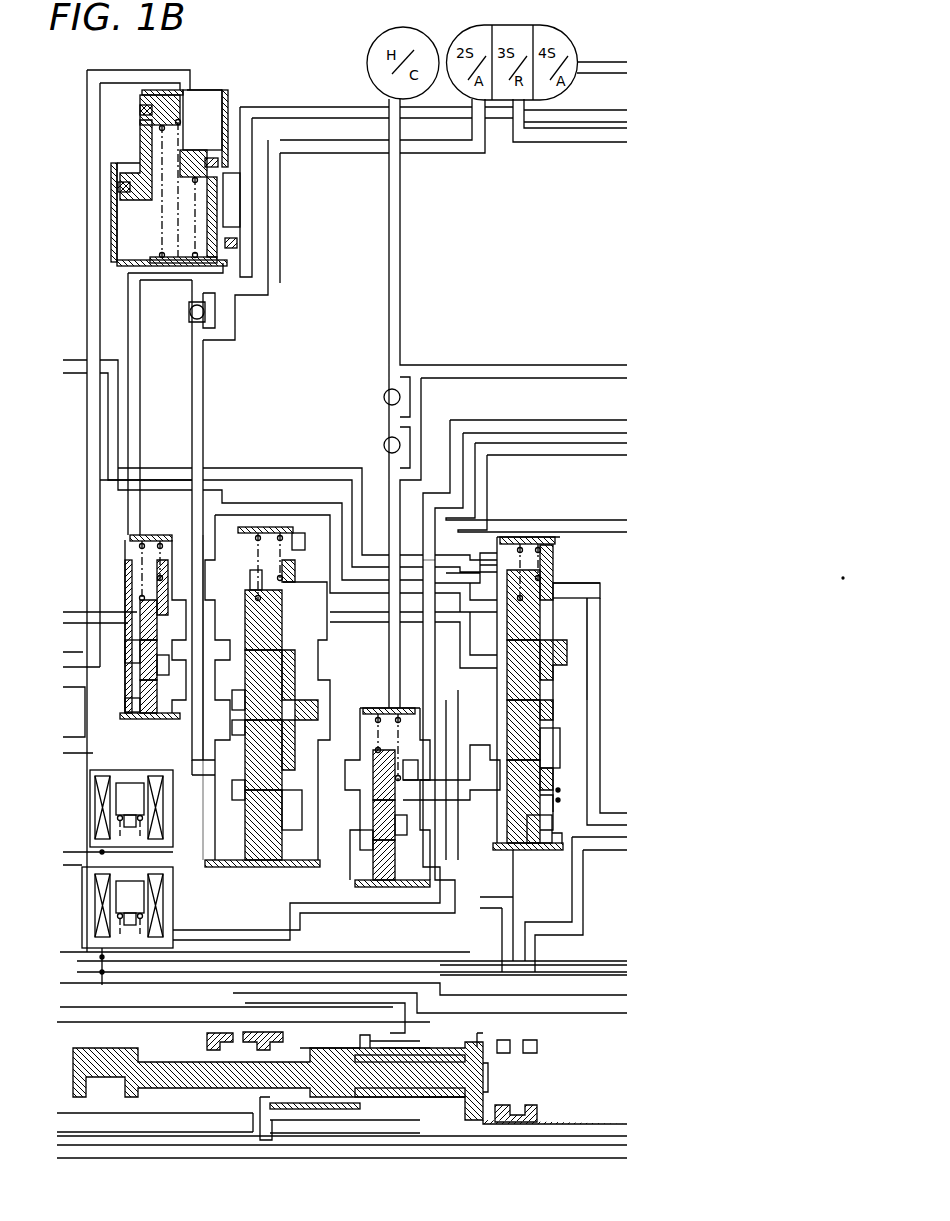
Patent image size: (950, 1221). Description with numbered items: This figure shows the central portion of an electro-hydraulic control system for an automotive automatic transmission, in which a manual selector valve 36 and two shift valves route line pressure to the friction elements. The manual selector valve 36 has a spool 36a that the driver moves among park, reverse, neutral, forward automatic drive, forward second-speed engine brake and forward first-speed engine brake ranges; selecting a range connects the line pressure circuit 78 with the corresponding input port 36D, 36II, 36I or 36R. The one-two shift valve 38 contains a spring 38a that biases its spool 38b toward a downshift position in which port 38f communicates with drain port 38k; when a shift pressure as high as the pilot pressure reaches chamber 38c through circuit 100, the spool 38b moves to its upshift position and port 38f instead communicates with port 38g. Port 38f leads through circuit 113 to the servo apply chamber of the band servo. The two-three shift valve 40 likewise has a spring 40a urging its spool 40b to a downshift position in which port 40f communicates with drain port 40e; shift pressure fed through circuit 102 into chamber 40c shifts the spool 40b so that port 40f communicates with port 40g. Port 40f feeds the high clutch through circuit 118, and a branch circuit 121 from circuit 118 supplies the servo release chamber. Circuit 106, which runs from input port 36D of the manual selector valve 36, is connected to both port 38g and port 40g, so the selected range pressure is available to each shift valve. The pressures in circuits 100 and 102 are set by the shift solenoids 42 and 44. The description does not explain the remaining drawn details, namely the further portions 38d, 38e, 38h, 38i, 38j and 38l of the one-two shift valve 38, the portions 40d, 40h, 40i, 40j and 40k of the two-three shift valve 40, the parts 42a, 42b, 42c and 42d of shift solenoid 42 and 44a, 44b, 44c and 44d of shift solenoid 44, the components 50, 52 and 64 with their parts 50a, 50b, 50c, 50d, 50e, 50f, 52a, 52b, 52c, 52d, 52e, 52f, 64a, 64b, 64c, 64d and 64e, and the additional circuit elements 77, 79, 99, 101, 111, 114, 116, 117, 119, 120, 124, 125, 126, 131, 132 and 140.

The manual selector valve 36 is at (218, 1142).
The input port 36I is at (215, 1036).
The input port 36II is at (250, 1125).
The input port 36D is at (303, 1043).
The input port 36R is at (505, 1105).
The spool 36a is at (488, 1080).
The 1-2 shift valve 38 is at (252, 870).
The spring 38a is at (255, 533).
The spool 38b is at (250, 572).
The chamber 38c is at (290, 868).
The shift valve land 38d is at (245, 618).
The shift valve land 38e is at (298, 636).
The port 38f is at (245, 712).
The port 38g is at (235, 730).
The shift valve land 38h is at (248, 790).
The shift valve land 38i is at (245, 825).
The shift valve port 38j is at (295, 585).
The drain port 38k is at (365, 710).
The shift valve port 38l is at (290, 768).
The 2-3 shift valve 40 is at (520, 867).
The spring 40a is at (538, 535).
The spool 40b is at (555, 568).
The chamber 40c is at (542, 855).
The shift valve land 40d is at (508, 615).
The drain port 40e is at (560, 648).
The port 40f is at (505, 675).
The port 40g is at (560, 705).
The shift valve port 40h is at (560, 762).
The shift valve port 40i is at (560, 790).
The shift valve port 40j is at (562, 592).
The shift valve port 40k is at (560, 733).
The shift solenoid 42 is at (118, 750).
The solenoid coil 42a is at (95, 775).
The solenoid plunger 42b is at (118, 792).
The solenoid coil 42c is at (92, 830).
The solenoid valve element 42d is at (120, 818).
The shift solenoid 44 is at (58, 875).
The solenoid coil 44a is at (95, 885).
The solenoid plunger 44b is at (118, 902).
The solenoid port 44c is at (168, 930).
The solenoid valve element 44d is at (120, 928).
The shift valve 50 is at (172, 460).
The shift valve spring 50a is at (155, 536).
The shift valve land 50b is at (170, 585).
The shift valve port 50c is at (158, 660).
The shift valve port 50d is at (125, 675).
The shift valve end 50e is at (125, 716).
The shift valve land 50f is at (172, 610).
The accumulator control valve 52 is at (358, 785).
The spring 52a is at (410, 704).
The valve end 52b is at (368, 830).
The valve land 52c is at (360, 785).
The valve land 52d is at (362, 820).
The valve land 52e is at (360, 838).
The valve port 52f is at (410, 785).
The lock-up control valve 64 is at (209, 80).
The valve land 64a is at (165, 90).
The spring 64b is at (160, 215).
The valve land 64c is at (230, 208).
The valve chamber 64d is at (205, 118).
The valve land 64e is at (130, 215).
The oil passage 77 is at (392, 1147).
The line pressure circuit 78 is at (95, 1022).
The oil passage 79 is at (68, 955).
The oil passage 99 is at (128, 858).
The circuit 100 is at (225, 860).
The oil passage 101 is at (102, 975).
The circuit 102 is at (457, 975).
The circuit 106 is at (67, 358).
The oil passage 111 is at (288, 468).
The circuit 113 is at (270, 270).
The check valve 114 is at (258, 338).
The oil passage 116 is at (195, 765).
The oil passage 117 is at (195, 749).
The circuit 118 is at (388, 300).
The check valve 119 is at (352, 374).
The check valve 120 is at (358, 424).
The branch circuit 121 is at (517, 380).
The oil passage 124 is at (468, 425).
The oil passage 125 is at (413, 560).
The oil passage 126 is at (511, 515).
The oil passage 131 is at (604, 680).
The oil passage 132 is at (573, 907).
The oil passage 140 is at (485, 1150).